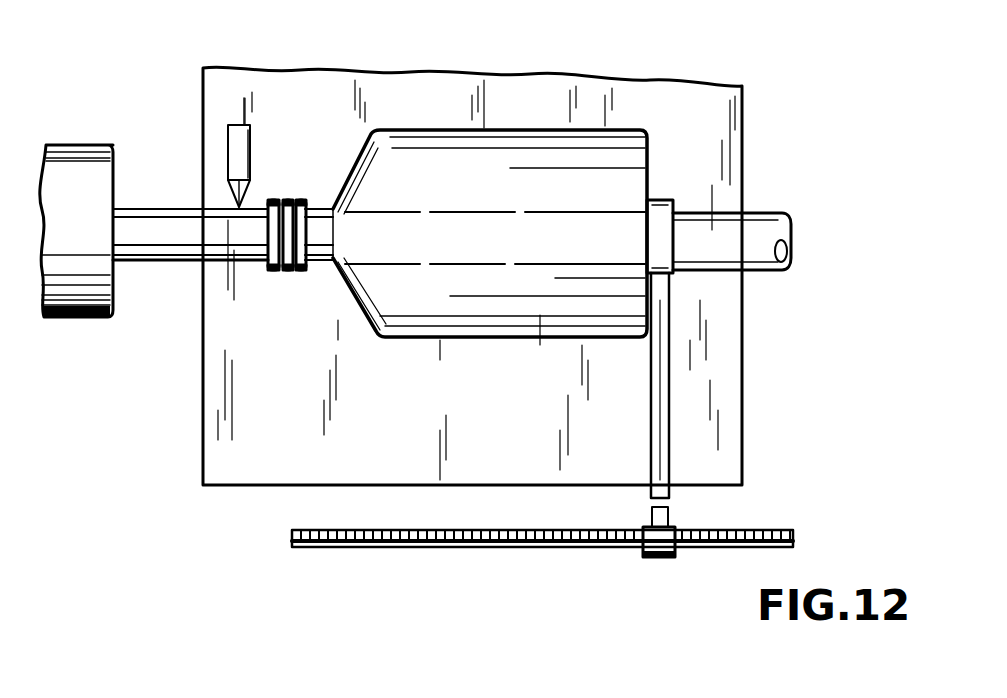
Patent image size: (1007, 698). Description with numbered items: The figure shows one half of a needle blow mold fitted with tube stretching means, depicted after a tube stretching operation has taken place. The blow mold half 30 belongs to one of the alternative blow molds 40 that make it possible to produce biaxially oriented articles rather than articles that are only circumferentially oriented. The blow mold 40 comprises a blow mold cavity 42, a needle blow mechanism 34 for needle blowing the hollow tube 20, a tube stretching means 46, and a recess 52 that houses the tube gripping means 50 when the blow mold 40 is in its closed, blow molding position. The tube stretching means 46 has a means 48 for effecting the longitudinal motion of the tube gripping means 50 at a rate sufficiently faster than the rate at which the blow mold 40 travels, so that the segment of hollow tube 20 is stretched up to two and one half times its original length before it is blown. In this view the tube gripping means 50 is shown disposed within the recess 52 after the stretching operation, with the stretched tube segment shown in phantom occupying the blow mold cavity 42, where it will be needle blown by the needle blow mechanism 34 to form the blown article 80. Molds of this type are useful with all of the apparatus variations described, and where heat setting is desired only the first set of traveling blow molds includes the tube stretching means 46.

The hollow tube 20 is at (152, 222).
The blow mold half 30 is at (737, 120).
The needle blow mechanism 34 is at (245, 143).
The alternative blow mold 40 is at (203, 470).
The blow mold cavity 42 is at (562, 130).
The tube stretching means 46 is at (278, 561).
The means for effecting longitudinal motion 48 is at (458, 550).
The tube gripping means 50 is at (668, 227).
The recess 52 is at (650, 432).
The blown article 80 is at (437, 315).